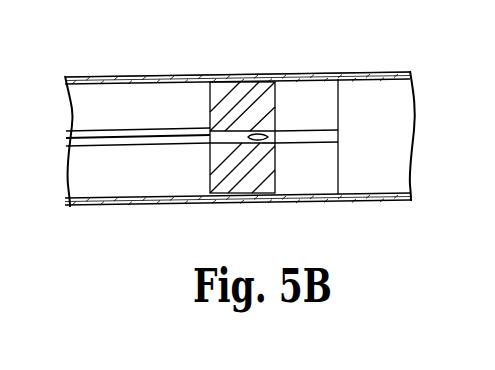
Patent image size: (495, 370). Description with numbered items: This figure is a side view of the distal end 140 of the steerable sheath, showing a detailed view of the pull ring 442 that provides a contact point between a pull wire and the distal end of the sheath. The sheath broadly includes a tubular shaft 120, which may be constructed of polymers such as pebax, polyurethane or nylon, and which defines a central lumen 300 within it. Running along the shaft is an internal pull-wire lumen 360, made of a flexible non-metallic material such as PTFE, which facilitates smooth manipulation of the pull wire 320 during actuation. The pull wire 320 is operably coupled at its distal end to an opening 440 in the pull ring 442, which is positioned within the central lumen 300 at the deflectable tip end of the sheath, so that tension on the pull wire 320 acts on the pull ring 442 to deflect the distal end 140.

The distal end 140 is at (343, 50).
The central lumen 300 is at (400, 145).
The tubular shaft 120 is at (156, 77).
The internal pull-wire lumen 360 is at (105, 132).
The pull wire 320 is at (227, 137).
The pull ring 442 is at (250, 134).
The opening 440 is at (270, 143).